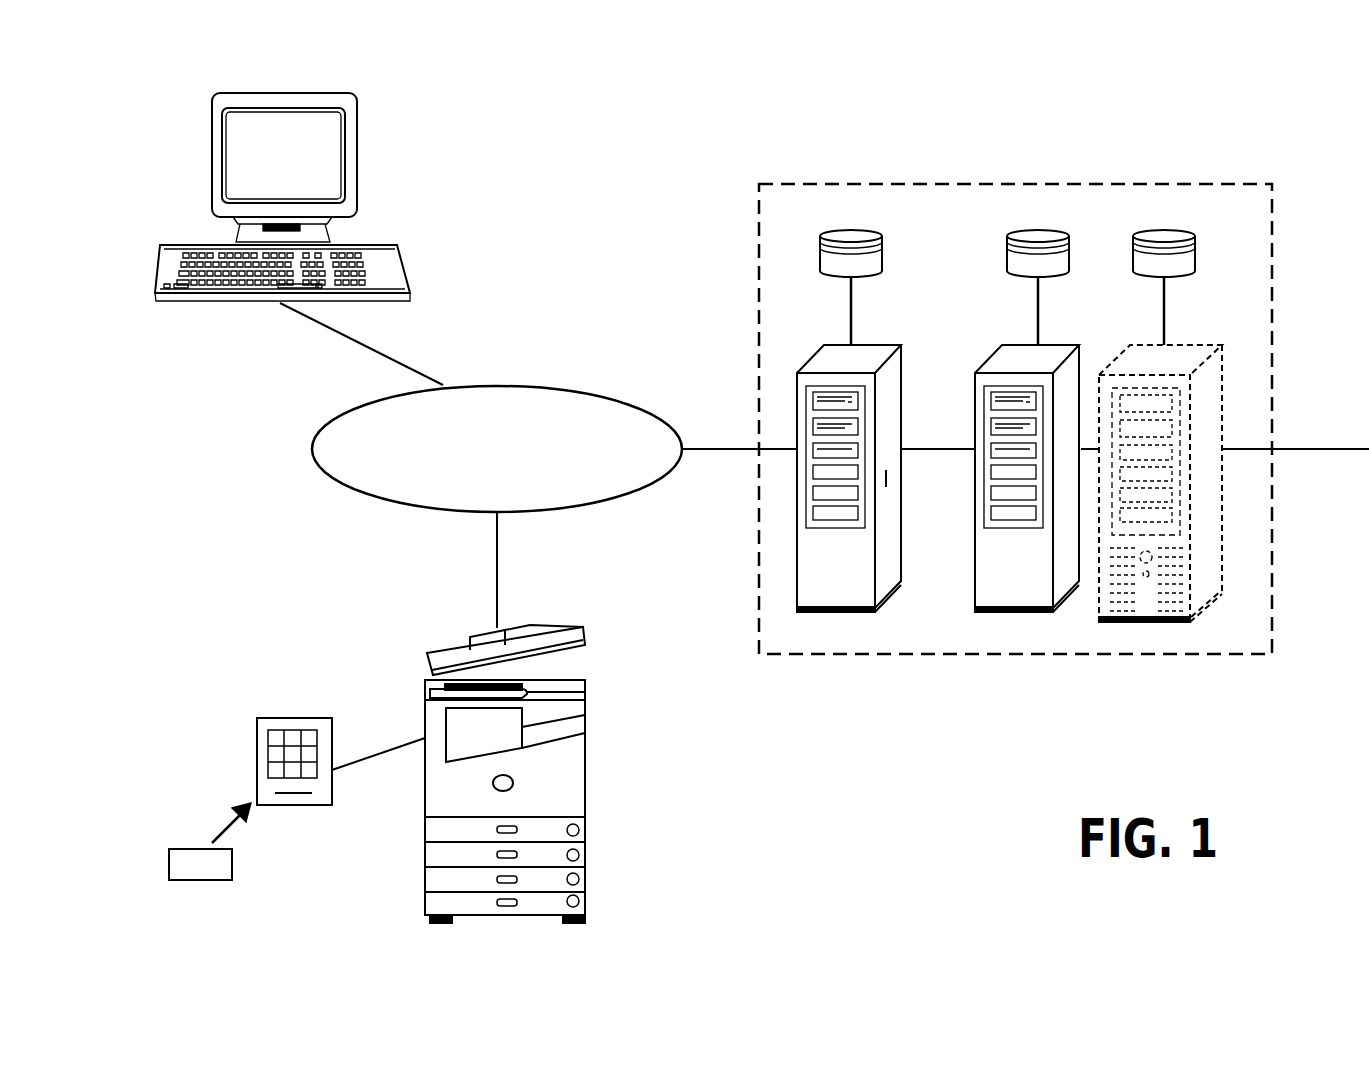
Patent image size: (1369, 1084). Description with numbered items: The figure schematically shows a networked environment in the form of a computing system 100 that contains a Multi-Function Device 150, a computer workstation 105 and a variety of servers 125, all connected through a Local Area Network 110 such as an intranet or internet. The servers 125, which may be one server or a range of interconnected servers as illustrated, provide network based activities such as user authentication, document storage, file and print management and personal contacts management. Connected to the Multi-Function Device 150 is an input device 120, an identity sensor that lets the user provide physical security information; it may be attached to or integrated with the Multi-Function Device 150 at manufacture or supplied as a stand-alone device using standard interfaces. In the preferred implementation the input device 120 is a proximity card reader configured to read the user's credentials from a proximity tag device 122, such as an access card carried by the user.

The computing system 100 is at (548, 330).
The computer workstation 105 is at (210, 148).
The Local Area Network 110 is at (312, 458).
The input device 120 is at (257, 772).
The proximity tag device 122 is at (232, 858).
The servers 125 is at (805, 355).
The Multi-Function Device 150 is at (422, 712).